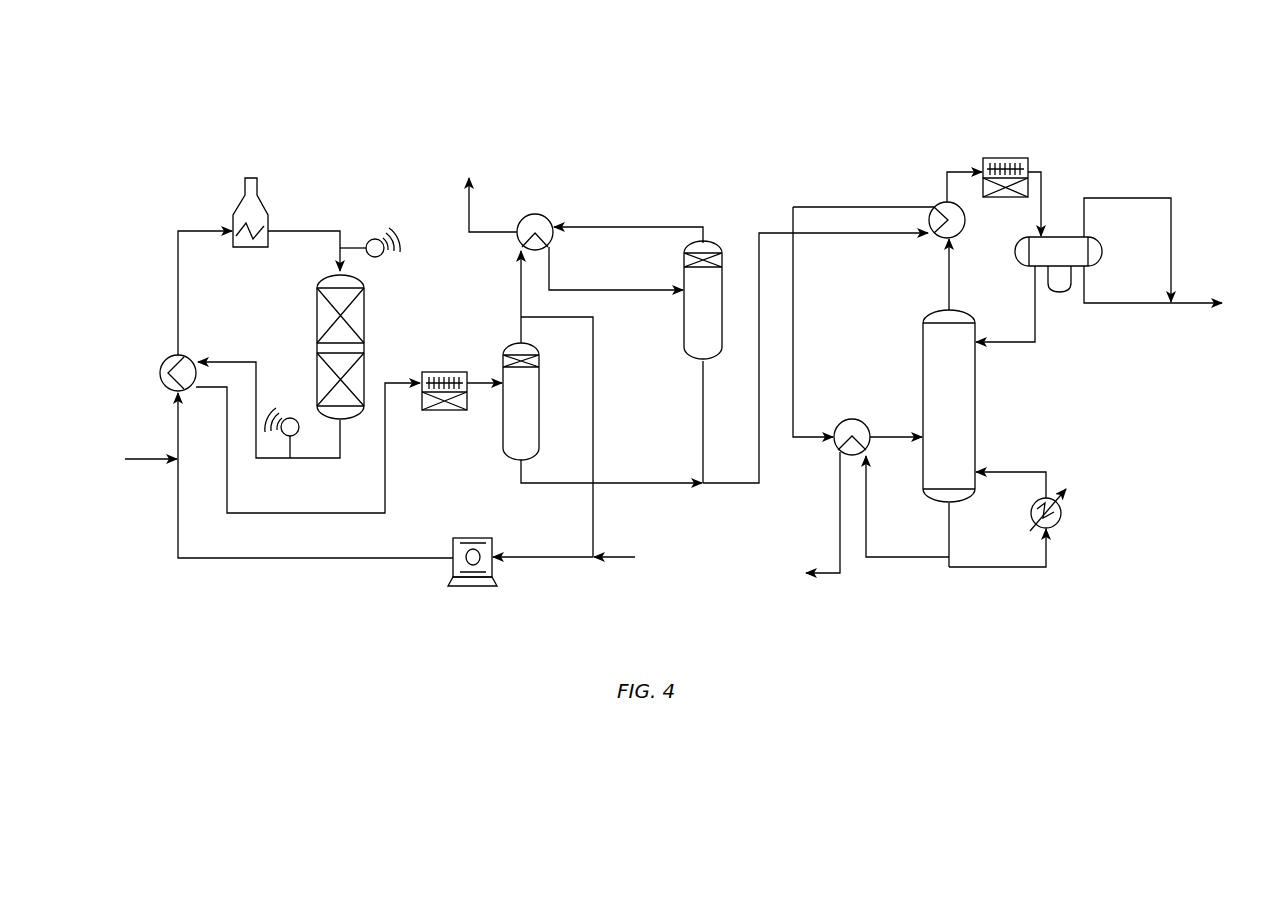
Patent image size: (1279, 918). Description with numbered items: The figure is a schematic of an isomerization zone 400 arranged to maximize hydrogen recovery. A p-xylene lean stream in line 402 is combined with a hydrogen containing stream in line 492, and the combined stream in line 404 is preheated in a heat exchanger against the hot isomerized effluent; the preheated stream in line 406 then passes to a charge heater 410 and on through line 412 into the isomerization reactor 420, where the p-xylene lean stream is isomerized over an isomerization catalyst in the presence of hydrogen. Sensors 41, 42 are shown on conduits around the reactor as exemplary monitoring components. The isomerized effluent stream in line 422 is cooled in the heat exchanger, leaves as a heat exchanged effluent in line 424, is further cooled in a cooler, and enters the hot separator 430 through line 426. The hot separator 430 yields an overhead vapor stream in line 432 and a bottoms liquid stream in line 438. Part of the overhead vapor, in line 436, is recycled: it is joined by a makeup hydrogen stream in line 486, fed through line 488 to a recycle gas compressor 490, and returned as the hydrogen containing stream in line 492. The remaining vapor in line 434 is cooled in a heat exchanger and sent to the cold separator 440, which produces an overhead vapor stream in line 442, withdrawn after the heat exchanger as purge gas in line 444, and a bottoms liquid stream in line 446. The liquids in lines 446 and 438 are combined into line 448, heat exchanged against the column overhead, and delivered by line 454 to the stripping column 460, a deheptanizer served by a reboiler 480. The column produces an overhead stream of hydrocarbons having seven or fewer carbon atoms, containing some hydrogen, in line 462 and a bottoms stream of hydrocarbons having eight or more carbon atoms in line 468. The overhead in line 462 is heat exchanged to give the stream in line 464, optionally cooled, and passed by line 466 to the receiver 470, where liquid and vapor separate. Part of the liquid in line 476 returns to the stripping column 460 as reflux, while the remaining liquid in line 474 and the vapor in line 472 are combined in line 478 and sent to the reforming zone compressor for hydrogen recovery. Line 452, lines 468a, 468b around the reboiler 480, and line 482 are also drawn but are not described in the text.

The isomerization zone 400 is at (370, 128).
The p-xylene lean stream line 402 is at (148, 460).
The combined stream line 404 is at (176, 437).
The preheated stream line 406 is at (177, 266).
The charge heater 410 is at (235, 215).
The reactor feed line 412 is at (338, 258).
The sensor 41 is at (360, 248).
The sensor 42 is at (292, 452).
The isomerization reactor 420 is at (368, 330).
The isomerized effluent stream line 422 is at (258, 362).
The heat exchanged isomerized effluent stream line 424 is at (308, 513).
The hot separator feed line 426 is at (490, 388).
The hot separator 430 is at (540, 423).
The hot separator overhead vapor stream line 432 is at (519, 326).
The remaining overhead vapor stream line 434 is at (519, 270).
The recycle overhead vapor stream line 436 is at (595, 389).
The hot separator bottoms liquid stream line 438 is at (560, 484).
The cold separator 440 is at (684, 312).
The cold separator overhead vapor stream line 442 is at (685, 226).
The purge gas line 444 is at (467, 222).
The cold separator bottoms liquid stream line 446 is at (702, 452).
The combined stream line 448 is at (708, 484).
The bypass line 452 is at (905, 206).
The stripping column feed line 454 is at (895, 434).
The stripping column 460 is at (976, 425).
The stripping column overhead stream line 462 is at (948, 298).
The heat exchanged overhead stream line 464 is at (946, 183).
The receiver feed line 466 is at (1045, 190).
The stripping column bottoms stream line 468 is at (947, 542).
The bottoms product line 468a is at (924, 558).
The reboiler feed line 468b is at (978, 568).
The receiver 470 is at (1102, 258).
The vapor stream line 472 is at (1123, 198).
The liquid stream line 474 is at (1084, 303).
The reflux stream line 476 is at (1025, 343).
The isomerized hydrogen stream line 478 is at (1193, 303).
The reboiler 480 is at (1056, 526).
The reboiler return line 482 is at (1002, 472).
The makeup hydrogen stream line 486 is at (622, 556).
The compressor feed line 488 is at (582, 558).
The recycle gas compressor 490 is at (470, 537).
The hydrogen containing stream line 492 is at (320, 560).